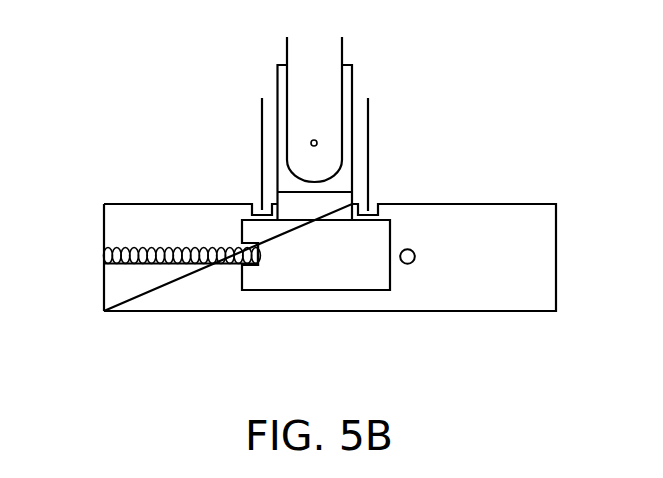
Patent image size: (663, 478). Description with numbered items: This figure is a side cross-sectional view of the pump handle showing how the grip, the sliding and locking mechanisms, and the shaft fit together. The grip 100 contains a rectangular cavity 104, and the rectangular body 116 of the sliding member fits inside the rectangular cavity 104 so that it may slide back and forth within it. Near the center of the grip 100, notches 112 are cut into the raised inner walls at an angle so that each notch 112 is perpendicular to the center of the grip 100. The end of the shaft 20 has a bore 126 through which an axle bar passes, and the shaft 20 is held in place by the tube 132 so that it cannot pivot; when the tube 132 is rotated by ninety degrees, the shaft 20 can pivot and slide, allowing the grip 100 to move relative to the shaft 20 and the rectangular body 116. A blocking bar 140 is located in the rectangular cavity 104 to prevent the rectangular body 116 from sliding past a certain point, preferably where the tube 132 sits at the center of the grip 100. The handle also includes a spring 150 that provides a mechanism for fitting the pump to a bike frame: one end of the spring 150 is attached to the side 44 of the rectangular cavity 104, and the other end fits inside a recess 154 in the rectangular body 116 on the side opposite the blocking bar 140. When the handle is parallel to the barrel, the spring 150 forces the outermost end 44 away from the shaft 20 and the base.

The shaft 20 is at (337, 52).
The side of rectangular cavity 44 is at (104, 293).
The grip 100 is at (517, 205).
The rectangular cavity 104 is at (170, 301).
The notch 112 is at (256, 211).
The rectangular body 116 is at (341, 283).
The bore 126 is at (317, 144).
The tube 132 is at (368, 115).
The blocking bar 140 is at (412, 265).
The spring 150 is at (120, 247).
The recess 154 is at (249, 265).